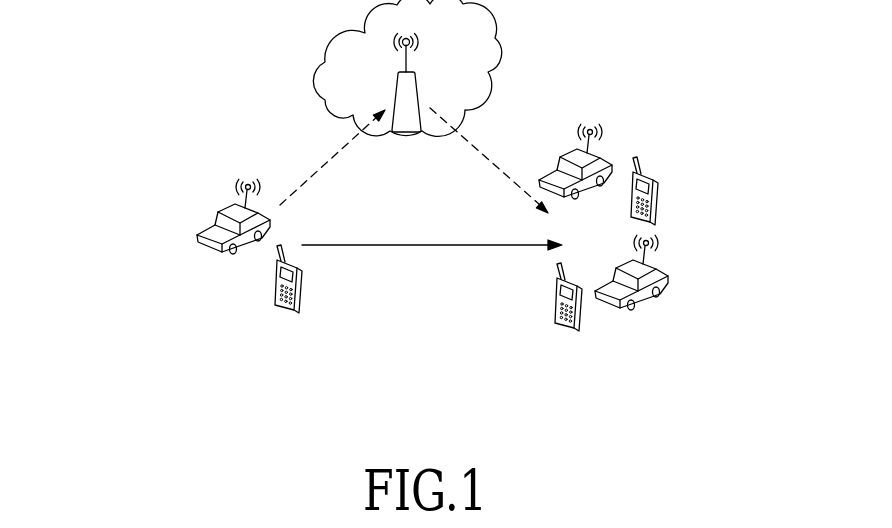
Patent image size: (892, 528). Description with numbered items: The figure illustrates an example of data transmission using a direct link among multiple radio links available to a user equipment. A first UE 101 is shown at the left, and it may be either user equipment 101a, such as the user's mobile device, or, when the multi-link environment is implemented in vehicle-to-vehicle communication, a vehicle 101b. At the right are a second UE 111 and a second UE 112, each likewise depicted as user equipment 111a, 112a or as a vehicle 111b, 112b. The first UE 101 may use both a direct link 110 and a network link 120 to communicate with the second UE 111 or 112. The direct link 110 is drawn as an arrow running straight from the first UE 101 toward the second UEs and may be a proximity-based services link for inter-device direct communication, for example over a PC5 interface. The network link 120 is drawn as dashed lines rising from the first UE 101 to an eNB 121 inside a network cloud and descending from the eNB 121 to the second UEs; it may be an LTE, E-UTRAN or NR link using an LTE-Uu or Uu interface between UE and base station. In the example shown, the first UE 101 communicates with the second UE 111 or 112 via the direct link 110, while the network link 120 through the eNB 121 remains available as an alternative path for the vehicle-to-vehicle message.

The first UE 101 is at (179, 246).
The user equipment 101a is at (274, 281).
The vehicle 101b is at (197, 235).
The direct link 110 is at (433, 246).
The second UE 111 is at (678, 174).
The user equipment 111a is at (664, 190).
The vehicle 111b is at (603, 157).
The second UE 112 is at (631, 338).
The user equipment 112a is at (571, 331).
The vehicle 112b is at (650, 316).
The network link 120 is at (321, 162).
The eNB 121 is at (403, 136).